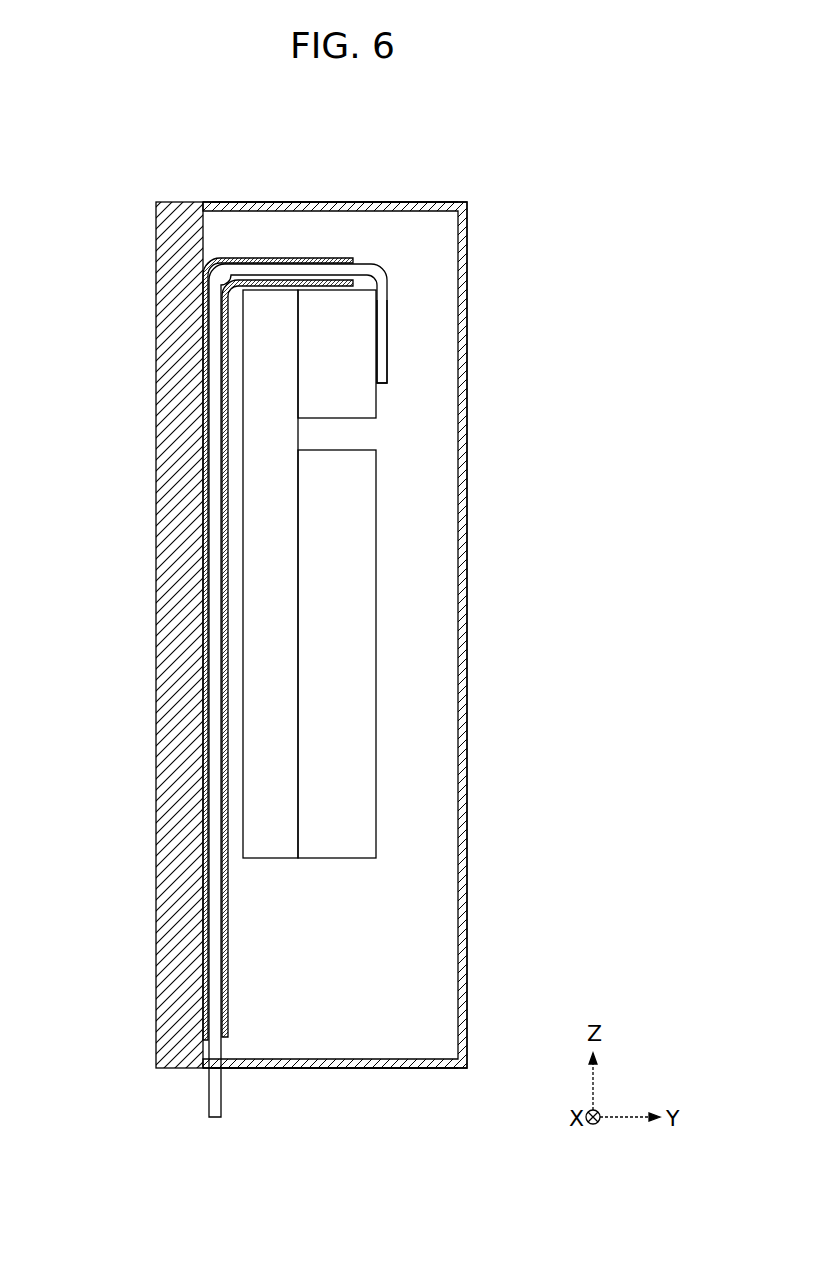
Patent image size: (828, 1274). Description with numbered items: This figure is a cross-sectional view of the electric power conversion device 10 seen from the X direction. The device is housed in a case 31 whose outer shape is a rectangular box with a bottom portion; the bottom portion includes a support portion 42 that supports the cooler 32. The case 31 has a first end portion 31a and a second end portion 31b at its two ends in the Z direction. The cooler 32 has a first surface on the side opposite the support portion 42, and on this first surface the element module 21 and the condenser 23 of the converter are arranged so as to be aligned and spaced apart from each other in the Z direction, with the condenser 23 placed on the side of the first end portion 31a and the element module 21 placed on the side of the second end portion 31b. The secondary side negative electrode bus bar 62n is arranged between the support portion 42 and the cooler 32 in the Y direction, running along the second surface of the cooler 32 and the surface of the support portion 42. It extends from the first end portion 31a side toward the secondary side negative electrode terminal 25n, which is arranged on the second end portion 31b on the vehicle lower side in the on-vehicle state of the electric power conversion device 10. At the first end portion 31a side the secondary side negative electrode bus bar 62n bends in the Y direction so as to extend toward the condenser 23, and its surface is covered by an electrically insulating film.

The electric power conversion device 10 is at (577, 165).
The case 31 is at (467, 248).
The first end portion 31a is at (413, 207).
The second end portion 31b is at (305, 1068).
The support portion 42 is at (156, 515).
The cooler 32 is at (278, 582).
The element module 21 is at (362, 653).
The condenser 23 is at (358, 390).
The secondary side negative electrode terminal 25n is at (207, 1097).
The secondary side negative electrode bus bar 62n is at (382, 332).